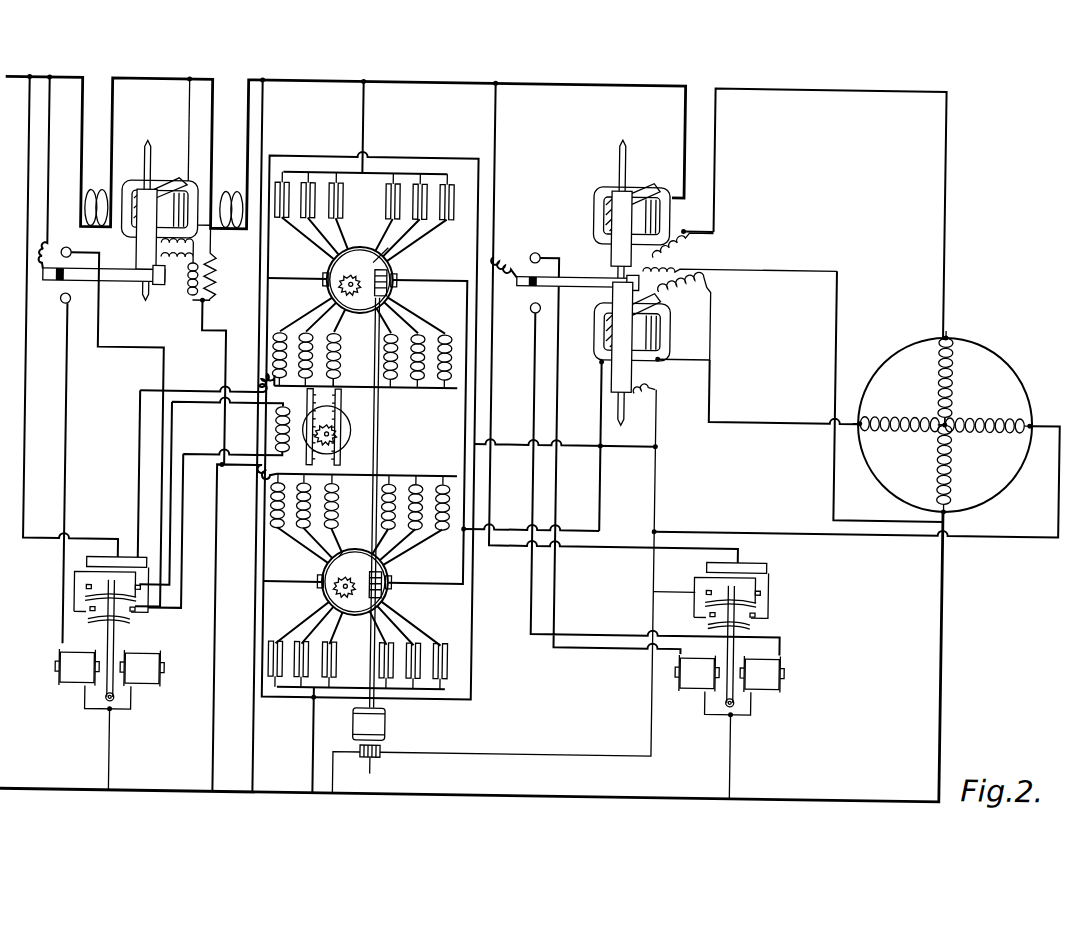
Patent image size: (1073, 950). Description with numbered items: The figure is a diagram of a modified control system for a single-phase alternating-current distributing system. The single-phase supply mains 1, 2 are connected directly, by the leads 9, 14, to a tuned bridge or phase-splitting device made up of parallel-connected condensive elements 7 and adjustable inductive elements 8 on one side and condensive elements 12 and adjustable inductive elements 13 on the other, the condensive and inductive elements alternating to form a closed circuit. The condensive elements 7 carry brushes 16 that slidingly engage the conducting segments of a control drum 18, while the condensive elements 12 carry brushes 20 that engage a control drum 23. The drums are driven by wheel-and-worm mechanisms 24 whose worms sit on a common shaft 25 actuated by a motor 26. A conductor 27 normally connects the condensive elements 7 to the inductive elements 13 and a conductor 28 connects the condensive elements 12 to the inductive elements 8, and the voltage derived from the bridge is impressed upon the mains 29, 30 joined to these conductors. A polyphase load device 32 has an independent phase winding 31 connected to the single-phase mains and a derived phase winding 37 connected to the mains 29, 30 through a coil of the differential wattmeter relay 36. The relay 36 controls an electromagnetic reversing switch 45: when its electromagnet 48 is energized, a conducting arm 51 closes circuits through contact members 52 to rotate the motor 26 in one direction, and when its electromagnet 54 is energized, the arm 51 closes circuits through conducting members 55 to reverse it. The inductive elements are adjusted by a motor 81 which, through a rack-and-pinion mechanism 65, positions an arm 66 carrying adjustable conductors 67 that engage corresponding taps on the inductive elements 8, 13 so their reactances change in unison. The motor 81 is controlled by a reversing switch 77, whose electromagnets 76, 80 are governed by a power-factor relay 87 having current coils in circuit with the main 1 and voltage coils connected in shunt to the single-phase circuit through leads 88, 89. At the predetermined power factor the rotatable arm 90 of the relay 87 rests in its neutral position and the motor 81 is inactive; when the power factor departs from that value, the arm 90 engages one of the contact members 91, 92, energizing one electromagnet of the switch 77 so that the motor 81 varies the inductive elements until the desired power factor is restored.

The supply main 1 is at (150, 85).
The supply main 2 is at (135, 797).
The condensive elements 7 is at (447, 195).
The adjustable inductive elements 8 is at (441, 333).
The lead 9 is at (361, 152).
The condensive elements 12 is at (436, 650).
The adjustable inductive elements 13 is at (336, 506).
The lead 14 is at (315, 737).
The brushes 16 is at (388, 266).
The control drum 18 is at (368, 315).
The brushes 20 is at (345, 553).
The control drum 23 is at (368, 618).
The wheel-and-worm mechanisms 24 is at (367, 471).
The common shaft 25 is at (379, 402).
The motor 26 is at (424, 736).
The conductor 27 is at (474, 248).
The conductor 28 is at (470, 405).
The main 29 is at (505, 445).
The main 30 is at (503, 530).
The independent phase winding 31 is at (950, 365).
The polyphase load device 32 is at (999, 460).
The differential wattmeter relay 36 is at (598, 267).
The phase winding 37 is at (885, 418).
The electromagnetic reversing switch 45 is at (734, 681).
The electromagnet 48 is at (785, 662).
The conducting arm 51 is at (740, 632).
The contact members 52 is at (770, 590).
The electromagnet 54 is at (696, 686).
The conducting members 55 is at (712, 598).
The rack-and-pinion mechanism 65 is at (318, 440).
The arm 66 is at (344, 389).
The adjustable conductors 67 is at (337, 347).
The relay magnet coil 76 is at (80, 686).
The reversing switch 77 is at (122, 673).
The relay magnet coil 80 is at (148, 686).
The motor 81 is at (341, 430).
The power-factor relay 87 is at (125, 361).
The lead 88 is at (186, 124).
The lead 89 is at (217, 640).
The rotatable arm 90 is at (120, 287).
The contact member 91 is at (66, 247).
The contact member 92 is at (61, 311).